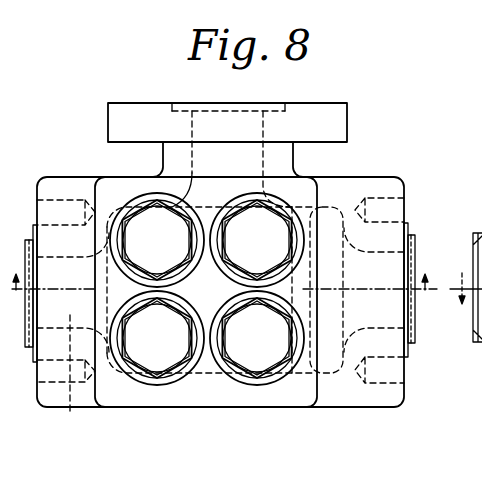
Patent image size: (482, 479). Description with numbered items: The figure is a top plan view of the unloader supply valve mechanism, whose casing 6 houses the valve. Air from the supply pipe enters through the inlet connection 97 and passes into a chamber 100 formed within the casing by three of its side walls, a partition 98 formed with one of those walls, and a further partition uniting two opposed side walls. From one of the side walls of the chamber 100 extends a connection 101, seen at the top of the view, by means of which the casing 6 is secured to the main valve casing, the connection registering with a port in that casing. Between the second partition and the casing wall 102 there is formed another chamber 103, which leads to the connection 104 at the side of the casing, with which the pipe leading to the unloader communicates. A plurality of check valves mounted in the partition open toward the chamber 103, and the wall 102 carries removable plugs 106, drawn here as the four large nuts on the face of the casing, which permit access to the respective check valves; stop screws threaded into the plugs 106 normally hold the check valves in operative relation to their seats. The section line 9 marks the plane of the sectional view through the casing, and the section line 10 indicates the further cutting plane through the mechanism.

The casing 6 is at (340, 179).
The section line 9- 9 is at (223, 302).
The section line 10- 10 is at (465, 287).
The inlet connection 97 is at (69, 375).
The partition 98 is at (304, 360).
The chamber 100 is at (208, 288).
The connection 101 is at (247, 104).
The casing wall 102 is at (146, 393).
The chamber 103 is at (333, 355).
The connection 104 is at (387, 315).
The removable plugs 106 is at (133, 317).